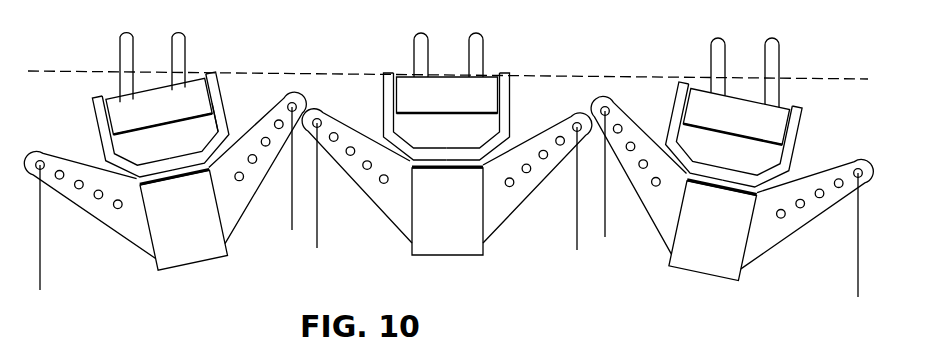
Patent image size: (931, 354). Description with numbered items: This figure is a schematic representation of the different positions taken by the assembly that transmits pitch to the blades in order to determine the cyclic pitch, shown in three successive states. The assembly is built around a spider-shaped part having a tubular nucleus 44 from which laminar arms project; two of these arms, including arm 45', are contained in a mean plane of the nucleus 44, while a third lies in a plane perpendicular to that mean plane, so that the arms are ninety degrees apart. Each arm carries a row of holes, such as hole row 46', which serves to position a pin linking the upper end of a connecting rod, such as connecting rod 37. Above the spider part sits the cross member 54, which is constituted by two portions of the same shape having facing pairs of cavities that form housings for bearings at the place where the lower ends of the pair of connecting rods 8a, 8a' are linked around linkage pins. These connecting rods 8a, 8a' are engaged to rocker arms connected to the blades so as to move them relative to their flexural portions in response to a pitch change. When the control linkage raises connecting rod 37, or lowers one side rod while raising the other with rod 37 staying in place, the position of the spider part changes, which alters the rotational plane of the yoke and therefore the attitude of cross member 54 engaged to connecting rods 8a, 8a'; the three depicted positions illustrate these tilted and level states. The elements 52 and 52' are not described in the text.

The connecting rod 8a is at (392, 68).
The connecting rod 8a' is at (502, 62).
The cross member 54 is at (133, 107).
The holder left leg 52 is at (380, 126).
The holder right leg 52' is at (504, 114).
The hole row 46' is at (68, 211).
The laminar arm 45' is at (355, 177).
The connecting rod 37 is at (322, 213).
The tubular nucleus 44 is at (172, 250).